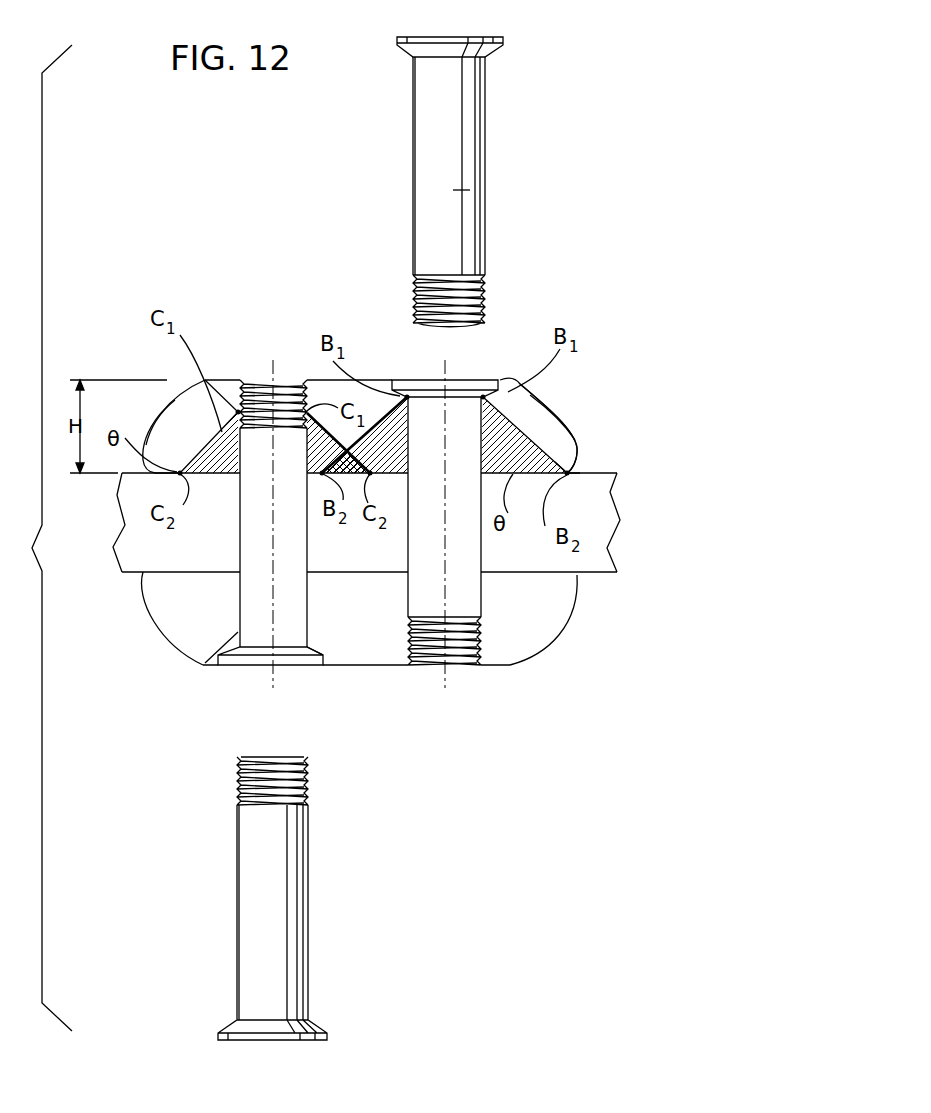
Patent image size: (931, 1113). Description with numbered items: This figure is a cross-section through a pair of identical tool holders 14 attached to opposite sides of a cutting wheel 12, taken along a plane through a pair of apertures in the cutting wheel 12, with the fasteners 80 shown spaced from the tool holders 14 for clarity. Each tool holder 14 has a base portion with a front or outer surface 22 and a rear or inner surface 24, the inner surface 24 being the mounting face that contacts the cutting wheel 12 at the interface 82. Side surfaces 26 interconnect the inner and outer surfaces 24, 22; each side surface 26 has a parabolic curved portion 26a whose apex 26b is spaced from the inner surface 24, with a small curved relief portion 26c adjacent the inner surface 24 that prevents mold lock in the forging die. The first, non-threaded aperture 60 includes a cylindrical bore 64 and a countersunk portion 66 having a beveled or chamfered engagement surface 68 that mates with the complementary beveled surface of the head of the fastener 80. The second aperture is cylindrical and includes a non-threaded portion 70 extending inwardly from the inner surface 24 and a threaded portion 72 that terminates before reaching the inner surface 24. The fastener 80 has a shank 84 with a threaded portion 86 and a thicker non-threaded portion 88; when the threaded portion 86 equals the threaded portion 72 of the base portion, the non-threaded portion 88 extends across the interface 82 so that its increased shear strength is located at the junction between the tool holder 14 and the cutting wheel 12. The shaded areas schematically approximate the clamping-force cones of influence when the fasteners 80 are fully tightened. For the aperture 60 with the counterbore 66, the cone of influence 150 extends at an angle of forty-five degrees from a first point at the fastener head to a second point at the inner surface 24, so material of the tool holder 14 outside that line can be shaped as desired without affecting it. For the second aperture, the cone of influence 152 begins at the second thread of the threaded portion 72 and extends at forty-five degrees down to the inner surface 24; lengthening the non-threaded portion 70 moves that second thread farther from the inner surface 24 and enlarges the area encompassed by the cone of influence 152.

The cutting wheel 12 is at (597, 558).
The tool holder 14 is at (385, 524).
The outer surface 22 is at (384, 506).
The inner surface 24 is at (347, 573).
The side surface 26 is at (385, 513).
The curved portion 26a is at (577, 438).
The apex 26b is at (580, 467).
The relief portion 26c is at (583, 478).
The first aperture 60 is at (345, 677).
The cylindrical bore 64 is at (240, 612).
The countersunk portion 66 is at (320, 663).
The chamfered engagement surface 68 is at (302, 663).
The non-threaded portion 70 is at (468, 590).
The threaded portion 72 is at (455, 658).
The fastener 80 is at (370, 315).
The interface 82 is at (182, 571).
The shank 84 is at (487, 118).
The threaded portion 86 is at (482, 295).
The non-threaded portion 88 is at (455, 190).
The cone of influence 150 is at (538, 420).
The cone of influence 152 is at (207, 405).